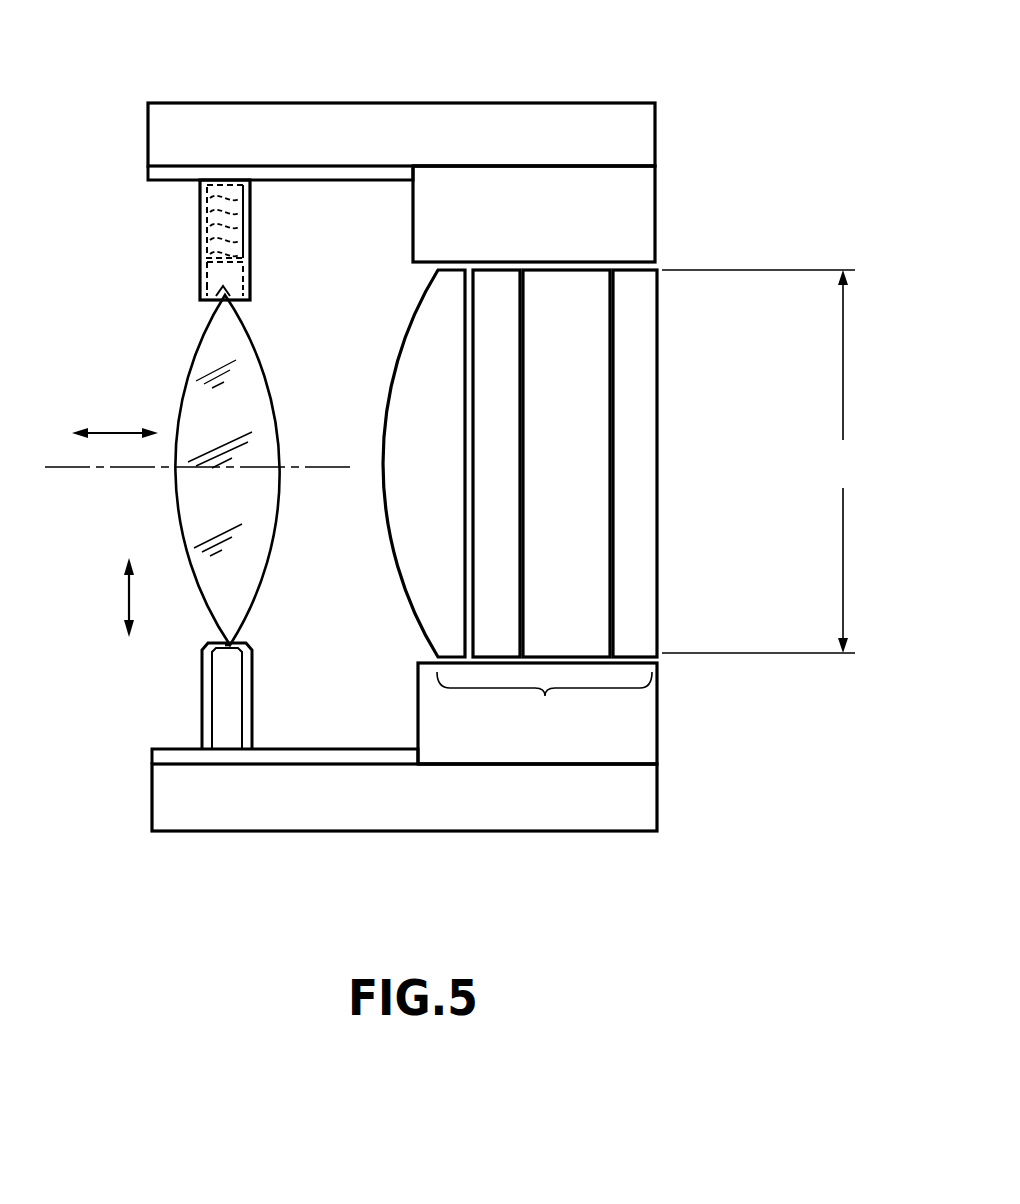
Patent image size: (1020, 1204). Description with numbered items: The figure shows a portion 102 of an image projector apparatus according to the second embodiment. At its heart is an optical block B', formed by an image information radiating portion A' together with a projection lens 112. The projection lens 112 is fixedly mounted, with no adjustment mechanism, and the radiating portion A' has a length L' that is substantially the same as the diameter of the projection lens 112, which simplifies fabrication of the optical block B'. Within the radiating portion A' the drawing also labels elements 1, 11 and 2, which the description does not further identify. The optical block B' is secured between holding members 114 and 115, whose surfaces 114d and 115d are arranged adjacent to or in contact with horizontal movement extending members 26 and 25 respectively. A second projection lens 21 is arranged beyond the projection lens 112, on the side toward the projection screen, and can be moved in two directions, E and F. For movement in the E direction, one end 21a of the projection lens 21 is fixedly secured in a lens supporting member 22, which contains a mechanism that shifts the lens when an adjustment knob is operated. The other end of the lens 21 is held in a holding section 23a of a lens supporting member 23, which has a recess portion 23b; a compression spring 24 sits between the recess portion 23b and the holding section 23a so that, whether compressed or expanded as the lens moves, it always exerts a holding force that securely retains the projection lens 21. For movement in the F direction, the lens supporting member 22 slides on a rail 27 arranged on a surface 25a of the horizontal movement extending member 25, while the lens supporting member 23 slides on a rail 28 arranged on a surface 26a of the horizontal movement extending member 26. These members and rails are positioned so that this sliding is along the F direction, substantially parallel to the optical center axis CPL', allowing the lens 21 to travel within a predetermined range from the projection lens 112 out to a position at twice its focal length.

The portion of image projector apparatus 102 is at (724, 62).
The horizontal movement extending member 26 is at (580, 115).
The surface of horizontal movement extending member 26a is at (346, 176).
The rail 28 is at (150, 175).
The holding member 114 is at (640, 236).
The surface of holding member 114d is at (598, 158).
The lens supporting member 23 is at (248, 262).
The holding section 23a is at (244, 283).
The recess portion 23b is at (252, 228).
The spring 24 is at (205, 222).
The second projection lens 21 is at (262, 511).
The end of projection lens 21a is at (250, 643).
The lens supporting member 22 is at (252, 700).
The rail 27 is at (170, 751).
The horizontal movement extending member 25 is at (543, 793).
The surface of horizontal movement extending member 25a is at (325, 750).
The holding member 115 is at (645, 710).
The surface of holding member 115d is at (630, 764).
The projection lens 112 is at (428, 358).
The first plate 1 is at (637, 400).
The second plate 11 is at (597, 478).
The third plate 2 is at (507, 601).
The image information radiating portion A' is at (725, 308).
The optical block B' is at (544, 703).
The length of image information radiating portion L' is at (760, 461).
The direction of movement F is at (113, 430).
The direction of movement E is at (126, 592).
The optical center axis CPL' is at (200, 511).